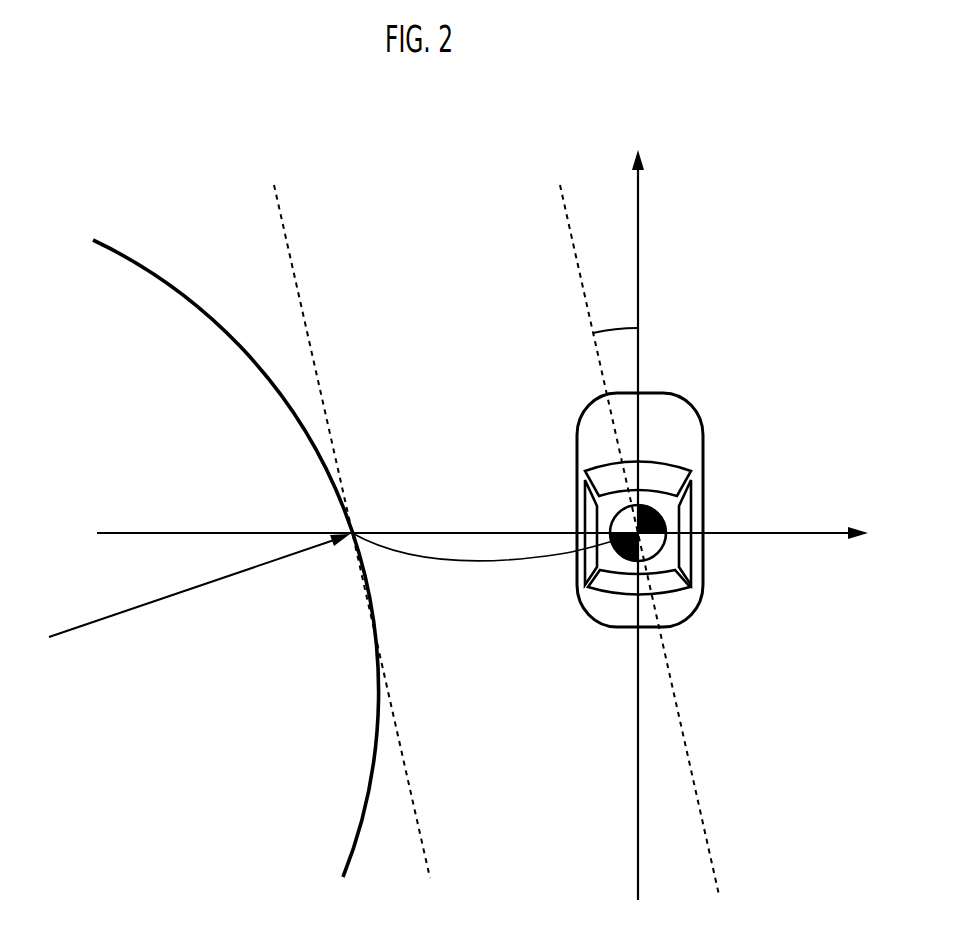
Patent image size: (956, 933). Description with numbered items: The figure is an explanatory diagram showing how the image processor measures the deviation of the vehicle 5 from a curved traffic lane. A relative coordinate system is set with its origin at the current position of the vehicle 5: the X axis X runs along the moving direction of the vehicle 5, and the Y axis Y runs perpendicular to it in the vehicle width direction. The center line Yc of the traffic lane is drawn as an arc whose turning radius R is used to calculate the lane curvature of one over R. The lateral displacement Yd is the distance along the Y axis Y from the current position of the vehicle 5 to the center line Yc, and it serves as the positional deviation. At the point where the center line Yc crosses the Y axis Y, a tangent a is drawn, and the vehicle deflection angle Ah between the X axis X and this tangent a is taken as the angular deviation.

The vehicle 5 is at (703, 447).
The X axis X is at (636, 511).
The Y axis Y is at (492, 535).
The turning radius R is at (199, 586).
The center line of the traffic lane Yc is at (177, 288).
The lateral displacement Yd is at (492, 568).
The vehicle deflection angle Ah is at (639, 540).
The tangent a is at (291, 252).